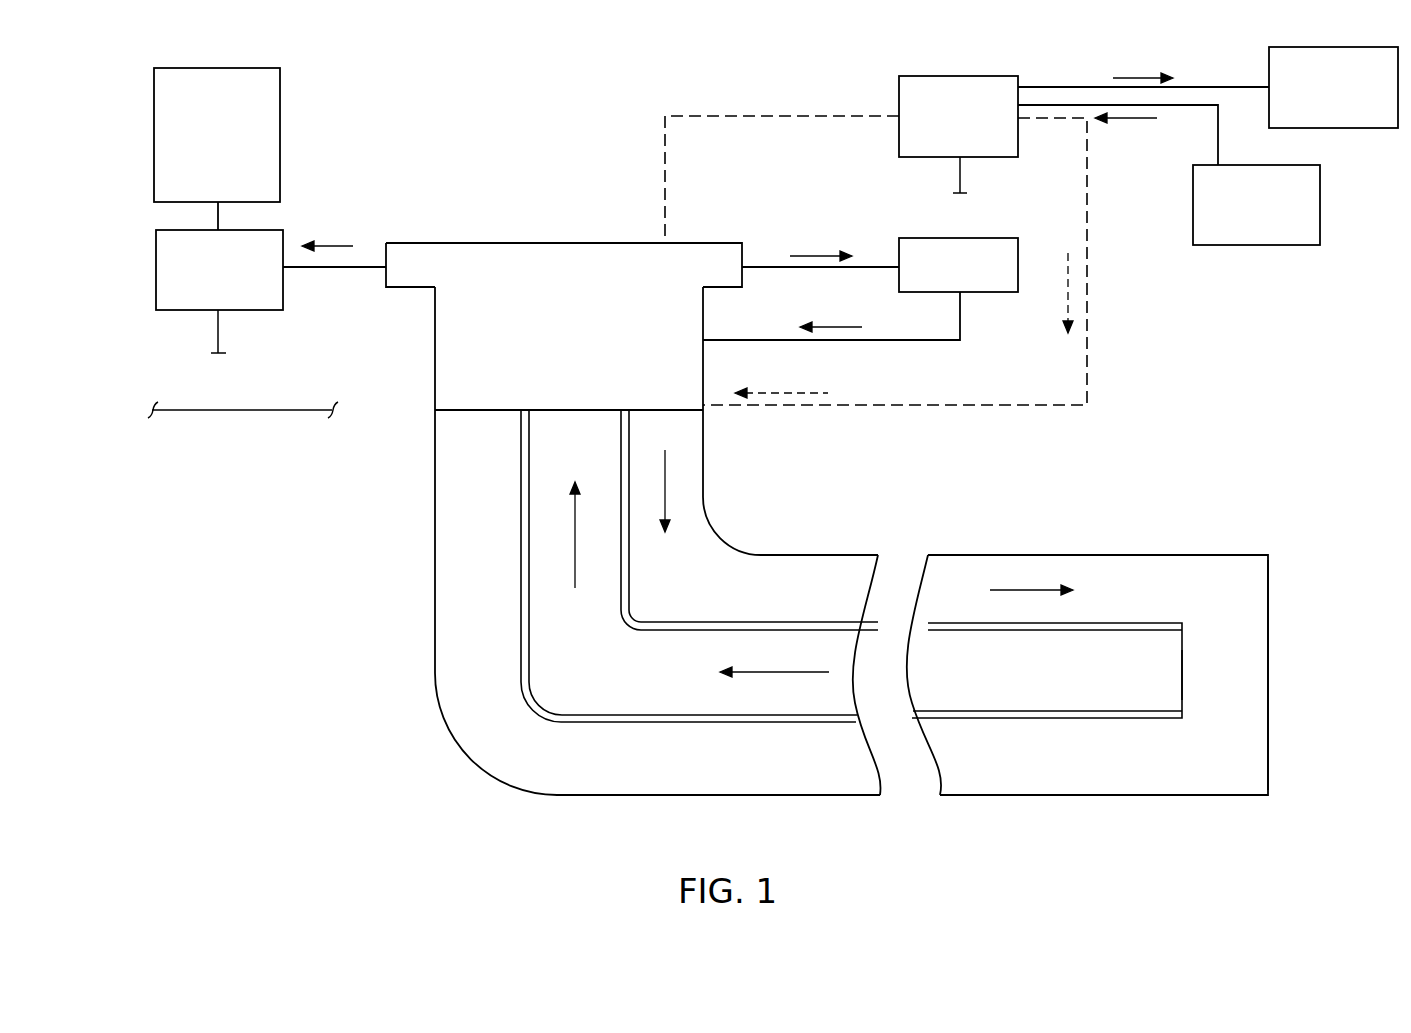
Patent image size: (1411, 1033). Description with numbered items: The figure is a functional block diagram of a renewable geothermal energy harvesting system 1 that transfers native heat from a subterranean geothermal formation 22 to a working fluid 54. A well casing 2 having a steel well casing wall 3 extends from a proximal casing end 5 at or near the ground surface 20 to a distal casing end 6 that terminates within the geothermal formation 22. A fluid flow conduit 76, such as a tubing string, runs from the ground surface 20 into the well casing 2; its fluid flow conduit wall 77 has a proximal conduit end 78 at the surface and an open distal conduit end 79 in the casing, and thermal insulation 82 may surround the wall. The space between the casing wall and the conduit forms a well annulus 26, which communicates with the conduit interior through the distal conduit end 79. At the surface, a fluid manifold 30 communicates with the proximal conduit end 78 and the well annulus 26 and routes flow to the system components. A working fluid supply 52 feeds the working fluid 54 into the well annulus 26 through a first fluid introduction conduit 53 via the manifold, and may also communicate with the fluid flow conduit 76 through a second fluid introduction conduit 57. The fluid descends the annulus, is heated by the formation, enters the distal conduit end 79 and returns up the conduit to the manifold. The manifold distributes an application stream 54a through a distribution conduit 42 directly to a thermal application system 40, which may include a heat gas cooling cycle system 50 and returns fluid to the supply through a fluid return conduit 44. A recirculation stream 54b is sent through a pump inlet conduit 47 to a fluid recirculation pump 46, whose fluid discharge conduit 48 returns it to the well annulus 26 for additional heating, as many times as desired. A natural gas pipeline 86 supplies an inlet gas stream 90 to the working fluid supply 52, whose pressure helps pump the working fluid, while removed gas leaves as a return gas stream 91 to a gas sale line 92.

The renewable geothermal energy harvesting system 1 is at (481, 116).
The well casing 2 is at (600, 790).
The well casing wall 3 is at (765, 793).
The proximal casing end 5 is at (445, 410).
The distal casing end 6 is at (1268, 608).
The ground surface 20 is at (245, 410).
The geothermal formation 22 is at (1172, 948).
The well annulus 26 is at (492, 500).
The fluid manifold 30 is at (482, 215).
The thermal application system 40 is at (160, 310).
The distribution conduit 42 is at (345, 268).
The fluid return conduit 44 is at (222, 340).
The fluid recirculation pump 46 is at (899, 252).
The pump inlet conduit 47 is at (750, 265).
The fluid discharge conduit 48 is at (845, 340).
The heat gas cooling cycle system 50 is at (280, 122).
The working fluid supply 52 is at (899, 90).
The first fluid introduction conduit 53 is at (960, 406).
The working fluid 54 is at (668, 490).
The application stream 54a is at (334, 245).
The recirculation stream 54b is at (820, 255).
The second fluid introduction conduit 57 is at (852, 118).
The fluid flow conduit 76 is at (582, 450).
The fluid flow conduit wall 77 is at (703, 626).
The proximal conduit end 78 is at (592, 410).
The distal conduit end 79 is at (1182, 672).
The thermal insulation 82 is at (812, 632).
The natural gas pipeline 86 is at (1275, 245).
The inlet gas stream 90 is at (1118, 121).
The return gas stream 91 is at (1135, 75).
The gas sale line 92 is at (1355, 130).